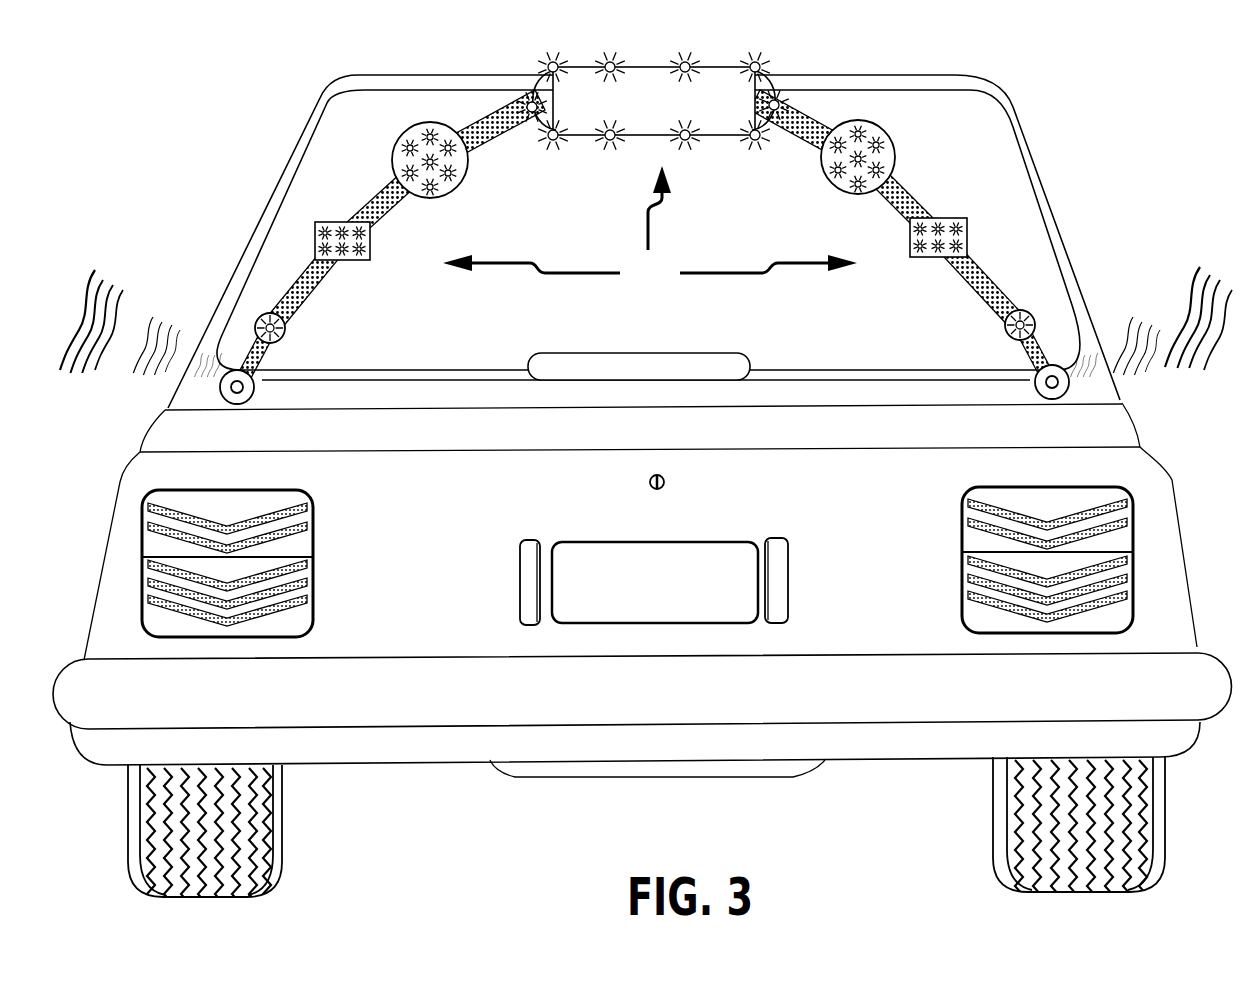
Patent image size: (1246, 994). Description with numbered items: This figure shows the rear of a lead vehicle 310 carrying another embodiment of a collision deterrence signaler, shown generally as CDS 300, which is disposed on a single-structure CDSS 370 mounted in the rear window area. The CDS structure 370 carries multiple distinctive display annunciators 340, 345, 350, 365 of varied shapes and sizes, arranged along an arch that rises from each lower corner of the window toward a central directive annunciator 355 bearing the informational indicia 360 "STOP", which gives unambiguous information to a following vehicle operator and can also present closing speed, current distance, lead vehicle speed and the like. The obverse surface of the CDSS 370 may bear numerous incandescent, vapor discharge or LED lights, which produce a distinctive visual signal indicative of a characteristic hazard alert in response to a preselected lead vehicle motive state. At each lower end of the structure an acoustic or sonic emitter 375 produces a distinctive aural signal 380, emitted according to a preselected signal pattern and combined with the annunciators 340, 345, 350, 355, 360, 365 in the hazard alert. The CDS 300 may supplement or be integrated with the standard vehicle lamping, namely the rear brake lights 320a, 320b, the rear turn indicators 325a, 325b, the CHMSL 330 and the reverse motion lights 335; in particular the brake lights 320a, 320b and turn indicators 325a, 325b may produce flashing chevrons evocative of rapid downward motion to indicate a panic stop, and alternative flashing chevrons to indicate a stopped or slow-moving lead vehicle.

The collision deterrence signaler (CDS) 300 is at (650, 227).
The vehicle 310 is at (1033, 142).
The rear brake light 320a is at (317, 604).
The rear brake light 320b is at (960, 615).
The rear turn indicator 325a is at (317, 502).
The rear turn indicator 325b is at (961, 494).
The CHMSL 330 is at (572, 353).
The reverse motion lights 335 is at (767, 550).
The display annunciator 340 is at (284, 342).
The display annunciator 345 is at (315, 236).
The display annunciator 350 is at (398, 146).
The directive annunciator 355 is at (591, 66).
The informational indicia 360 is at (717, 82).
The display annunciator 365 is at (684, 62).
The CDS structure (CDSS) 370 is at (370, 197).
The acoustic or sonic emitter 375 is at (1035, 387).
The aural signal 380 is at (1185, 284).